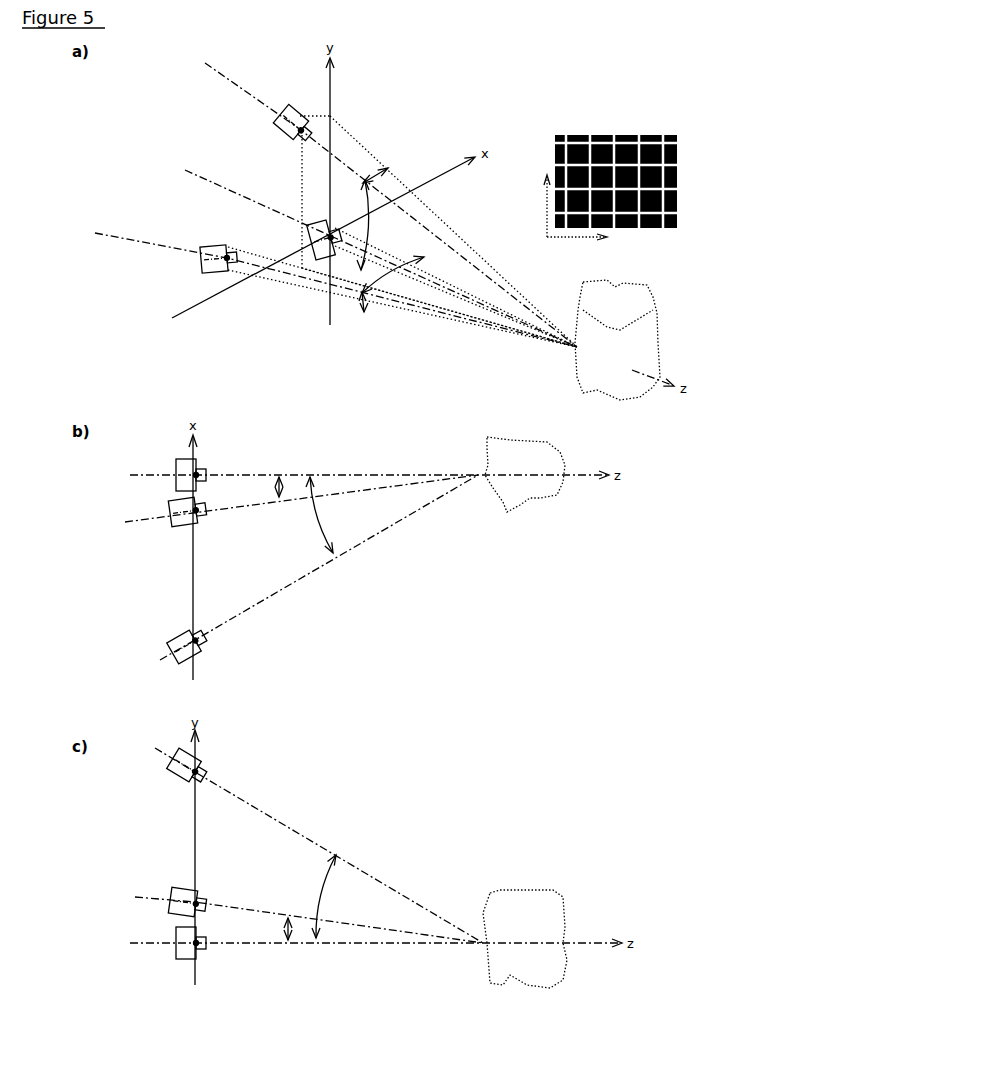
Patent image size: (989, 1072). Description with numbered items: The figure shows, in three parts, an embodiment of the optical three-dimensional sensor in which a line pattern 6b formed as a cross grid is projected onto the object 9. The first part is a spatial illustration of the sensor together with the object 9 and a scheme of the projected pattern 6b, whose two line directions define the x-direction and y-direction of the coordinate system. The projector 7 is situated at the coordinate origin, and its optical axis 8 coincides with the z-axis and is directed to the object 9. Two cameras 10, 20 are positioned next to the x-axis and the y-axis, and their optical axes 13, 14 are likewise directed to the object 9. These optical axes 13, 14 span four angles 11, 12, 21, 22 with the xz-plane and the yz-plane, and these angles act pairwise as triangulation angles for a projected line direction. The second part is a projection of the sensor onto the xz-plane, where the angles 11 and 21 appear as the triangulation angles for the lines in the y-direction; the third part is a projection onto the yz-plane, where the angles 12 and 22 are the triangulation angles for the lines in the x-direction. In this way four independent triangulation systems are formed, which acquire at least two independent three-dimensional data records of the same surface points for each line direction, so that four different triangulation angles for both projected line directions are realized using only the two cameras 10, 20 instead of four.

The pattern 6b is at (608, 182).
The projector 7 is at (256, 588).
The optical axis 8 is at (373, 557).
The object 9 is at (576, 634).
The camera 10 is at (239, 442).
The angle 11 is at (322, 326).
The angle 12 is at (336, 559).
The optical axis 13 is at (350, 495).
The optical axis 14 is at (327, 584).
The camera 20 is at (200, 573).
The angle 21 is at (363, 404).
The angle 22 is at (317, 616).